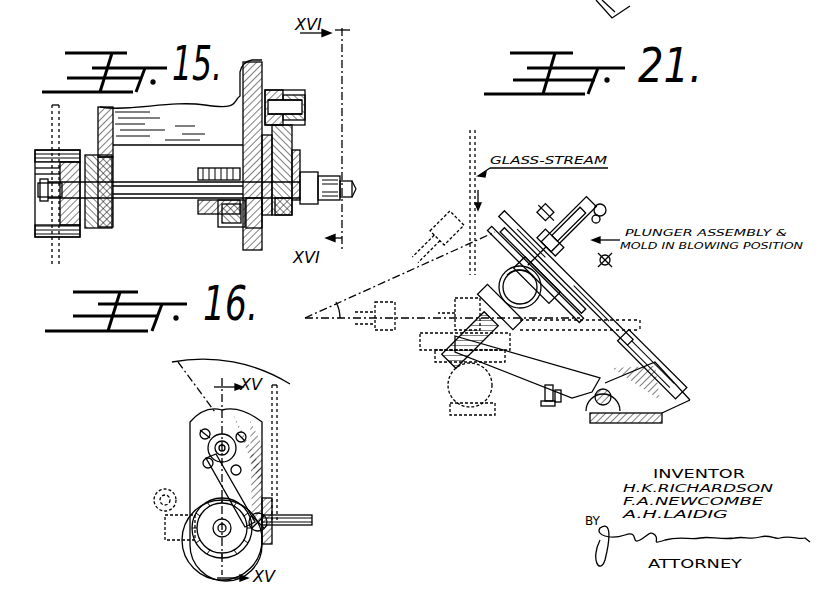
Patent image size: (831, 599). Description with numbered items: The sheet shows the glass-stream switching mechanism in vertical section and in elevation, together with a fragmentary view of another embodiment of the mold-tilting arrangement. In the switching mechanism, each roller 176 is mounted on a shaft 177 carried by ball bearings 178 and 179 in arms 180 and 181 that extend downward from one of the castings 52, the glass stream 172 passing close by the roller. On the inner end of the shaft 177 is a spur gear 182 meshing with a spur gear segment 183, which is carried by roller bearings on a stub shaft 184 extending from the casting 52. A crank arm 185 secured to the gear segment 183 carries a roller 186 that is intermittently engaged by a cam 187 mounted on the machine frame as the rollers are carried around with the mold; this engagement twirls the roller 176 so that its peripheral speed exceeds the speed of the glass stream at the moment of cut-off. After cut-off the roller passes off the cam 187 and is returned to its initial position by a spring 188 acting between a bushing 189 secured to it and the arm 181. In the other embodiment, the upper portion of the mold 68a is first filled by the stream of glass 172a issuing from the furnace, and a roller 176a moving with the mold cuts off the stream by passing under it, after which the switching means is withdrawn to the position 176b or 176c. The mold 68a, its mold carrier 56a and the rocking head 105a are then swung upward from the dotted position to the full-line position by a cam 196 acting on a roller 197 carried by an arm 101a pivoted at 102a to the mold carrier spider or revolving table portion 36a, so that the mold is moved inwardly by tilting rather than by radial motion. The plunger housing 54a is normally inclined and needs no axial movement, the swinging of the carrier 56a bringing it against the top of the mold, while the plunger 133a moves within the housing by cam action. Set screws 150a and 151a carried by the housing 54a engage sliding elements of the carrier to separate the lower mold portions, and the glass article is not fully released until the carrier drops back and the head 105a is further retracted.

In FIG. 15, the casting 52 is at (244, 62).
In FIG. 15, the glass stream 172 is at (80, 128).
In FIG. 16, the glass stream 172 is at (278, 411).
In FIG. 15, the roller 176 is at (42, 237).
In FIG. 16, the roller 176 is at (218, 540).
In FIG. 15, the shaft 177 is at (160, 198).
In FIG. 16, the shaft 177 is at (215, 560).
In FIG. 15, the ball bearing 178 is at (100, 228).
In FIG. 15, the ball bearing 179 is at (255, 228).
In FIG. 15, the arm 180 is at (112, 228).
In FIG. 15, the arm 181 is at (236, 227).
In FIG. 16, the arm 181 is at (205, 530).
In FIG. 15, the spur gear 182 is at (292, 214).
In FIG. 16, the spur gear 182 is at (205, 543).
In FIG. 15, the spur gear segment 183 is at (250, 150).
In FIG. 16, the spur gear segment 183 is at (265, 460).
In FIG. 15, the stub shaft 184 is at (278, 90).
In FIG. 16, the stub shaft 184 is at (208, 446).
In FIG. 15, the crank arm 185 is at (300, 142).
In FIG. 16, the crank arm 185 is at (192, 472).
In FIG. 15, the roller 186 is at (345, 174).
In FIG. 16, the roller 186 is at (160, 495).
In FIG. 15, the cam 187 is at (354, 192).
In FIG. 16, the cam 187 is at (165, 520).
In FIG. 15, the spring 188 is at (226, 214).
In FIG. 15, the bushing 189 is at (205, 175).
In FIG. 21, the stream of glass 172a is at (476, 158).
In FIG. 21, the roller 176a is at (455, 297).
In FIG. 21, the withdrawn position of roller 176b is at (371, 325).
In FIG. 21, the withdrawn position of roller 176c is at (450, 215).
In FIG. 21, the set screw 150a is at (548, 212).
In FIG. 21, the plunger housing 54a is at (598, 215).
In FIG. 21, the plunger 133a is at (608, 211).
In FIG. 21, the set screw 151a is at (611, 264).
In FIG. 21, the mold carrier 56a is at (612, 320).
In FIG. 21, the mold 68a is at (510, 277).
In FIG. 21, the rocking head 105a is at (550, 322).
In FIG. 21, the arm 101a is at (532, 395).
In FIG. 21, the cam 196 is at (548, 406).
In FIG. 21, the roller 197 is at (562, 400).
In FIG. 21, the pivot 102a is at (618, 424).
In FIG. 21, the mold carrier spider 36a is at (668, 418).